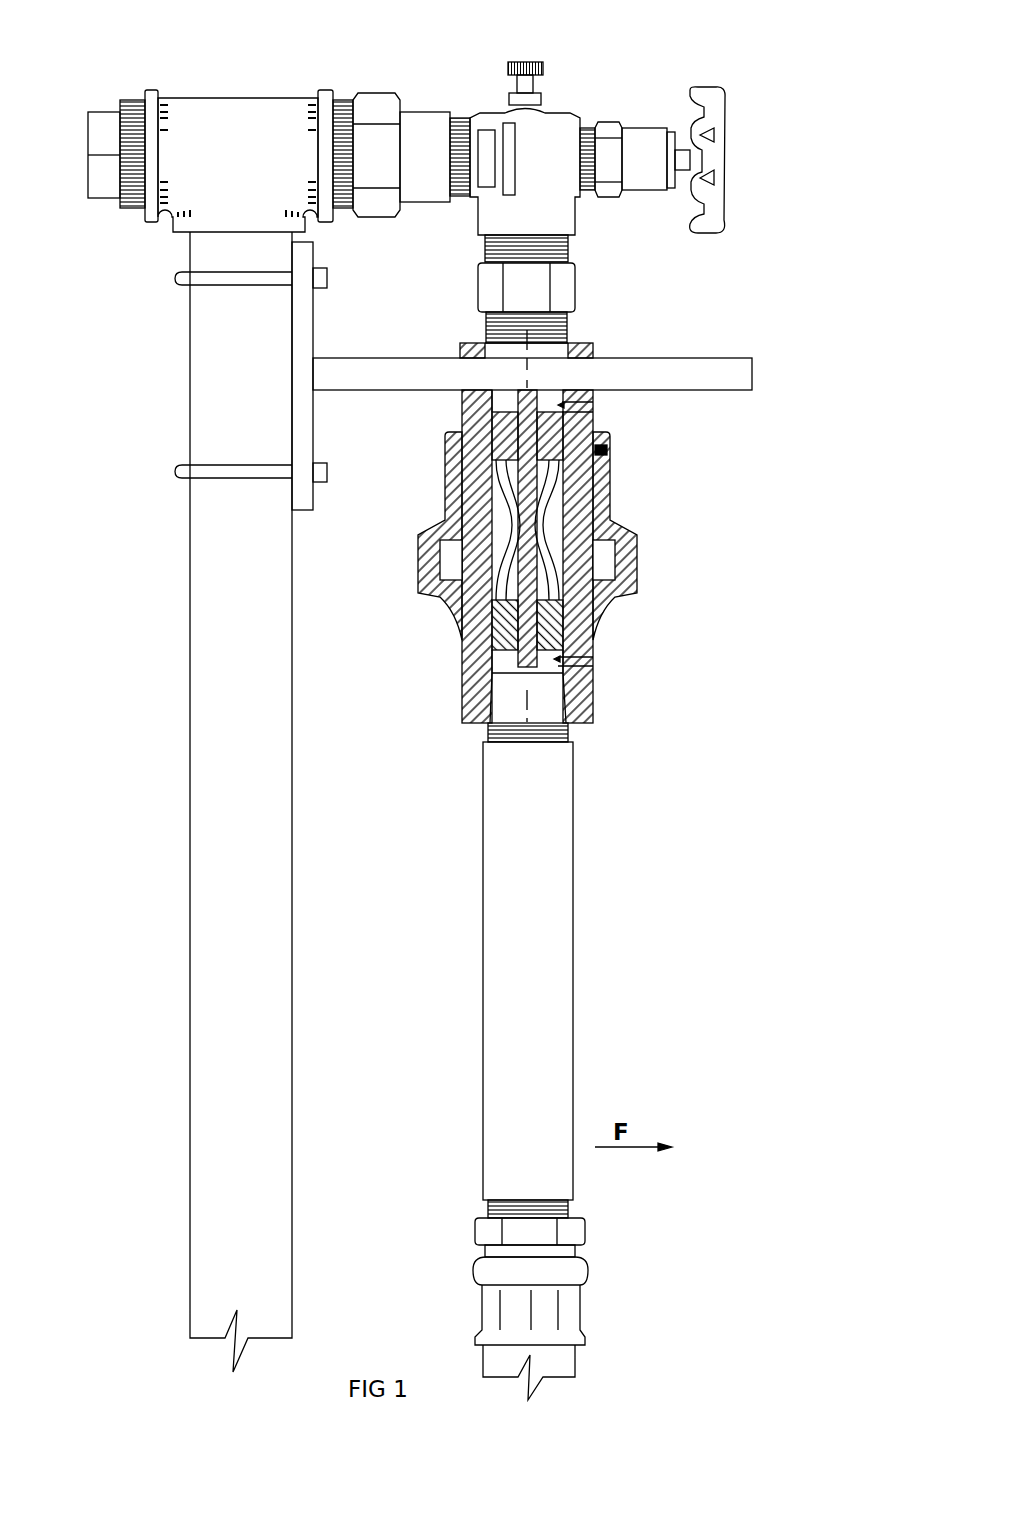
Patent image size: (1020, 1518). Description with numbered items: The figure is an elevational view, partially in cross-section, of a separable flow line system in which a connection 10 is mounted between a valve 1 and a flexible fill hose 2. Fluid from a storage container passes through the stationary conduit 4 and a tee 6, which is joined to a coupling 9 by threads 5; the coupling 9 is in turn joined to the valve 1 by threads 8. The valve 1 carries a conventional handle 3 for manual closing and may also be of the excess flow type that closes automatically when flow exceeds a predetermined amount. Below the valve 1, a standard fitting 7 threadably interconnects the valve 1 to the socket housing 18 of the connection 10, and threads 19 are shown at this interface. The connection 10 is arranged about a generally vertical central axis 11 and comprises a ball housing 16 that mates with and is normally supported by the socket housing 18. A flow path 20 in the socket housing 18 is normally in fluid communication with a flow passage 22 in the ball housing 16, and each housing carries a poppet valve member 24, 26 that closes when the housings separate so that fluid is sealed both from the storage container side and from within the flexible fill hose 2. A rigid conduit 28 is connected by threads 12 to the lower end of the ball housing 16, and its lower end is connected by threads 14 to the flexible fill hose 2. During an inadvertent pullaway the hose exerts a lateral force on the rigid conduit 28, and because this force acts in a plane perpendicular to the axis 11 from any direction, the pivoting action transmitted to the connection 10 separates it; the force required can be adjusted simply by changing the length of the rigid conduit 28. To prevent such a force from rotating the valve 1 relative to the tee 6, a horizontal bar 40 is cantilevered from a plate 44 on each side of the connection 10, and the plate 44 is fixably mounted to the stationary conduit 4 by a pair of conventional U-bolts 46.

The valve 1 is at (557, 122).
The flexible fill hose 2 is at (565, 1367).
The handle 3 is at (715, 162).
The stationary conduit 4 is at (297, 793).
The threads 5 is at (343, 100).
The tee 6 is at (207, 110).
The fitting 7 is at (560, 290).
The threads 8 is at (458, 105).
The coupling 9 is at (372, 103).
The connection 10 is at (665, 570).
The central axis 11 is at (527, 435).
The threads 12 is at (487, 735).
The threads 14 is at (487, 1208).
The ball housing 16 is at (582, 702).
The socket housing 18 is at (610, 520).
The threads 19 is at (570, 330).
The flow path 20 is at (555, 468).
The flow passage 22 is at (510, 553).
The poppet valve member 24 is at (525, 498).
The poppet valve member 26 is at (503, 587).
The rigid conduit 28 is at (550, 908).
The bar 40 is at (717, 373).
The plate 44 is at (300, 325).
The U-bolts 46 is at (175, 280).